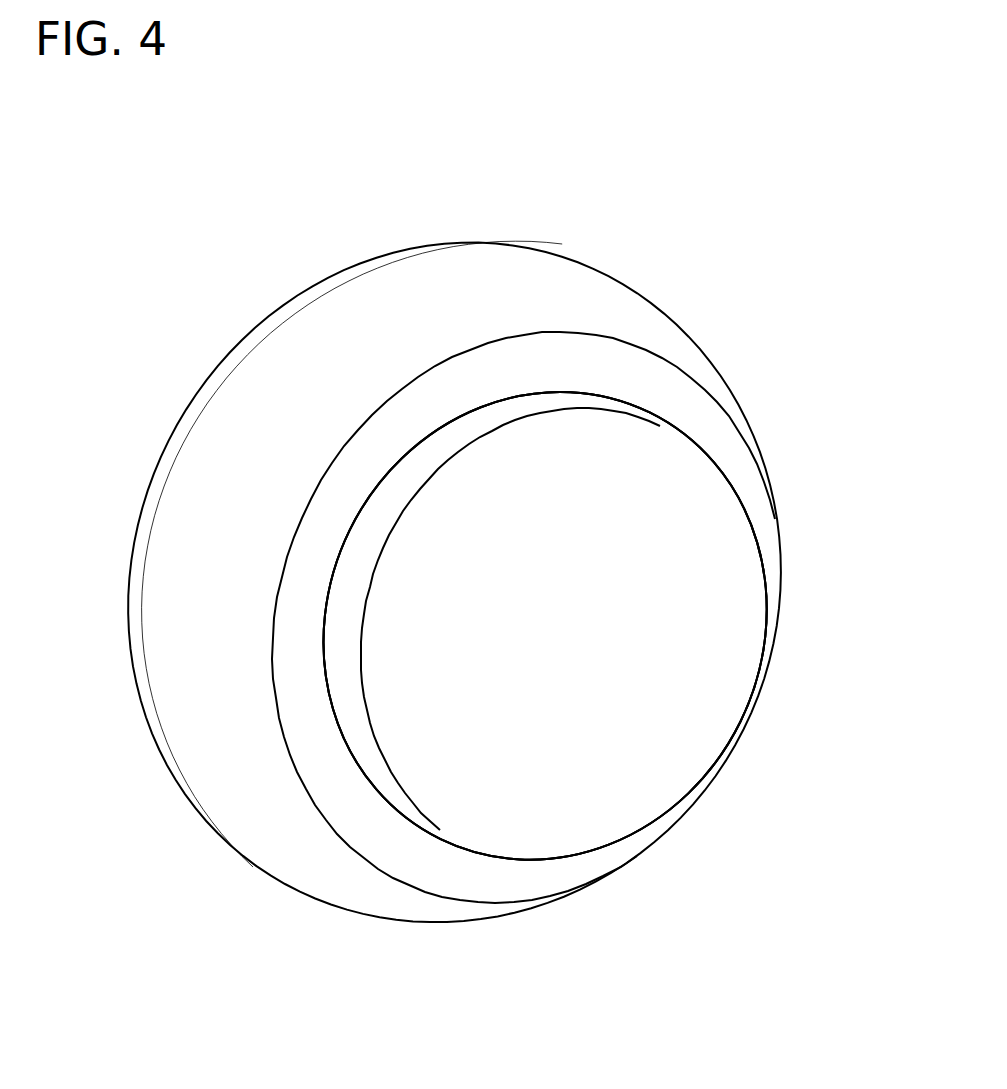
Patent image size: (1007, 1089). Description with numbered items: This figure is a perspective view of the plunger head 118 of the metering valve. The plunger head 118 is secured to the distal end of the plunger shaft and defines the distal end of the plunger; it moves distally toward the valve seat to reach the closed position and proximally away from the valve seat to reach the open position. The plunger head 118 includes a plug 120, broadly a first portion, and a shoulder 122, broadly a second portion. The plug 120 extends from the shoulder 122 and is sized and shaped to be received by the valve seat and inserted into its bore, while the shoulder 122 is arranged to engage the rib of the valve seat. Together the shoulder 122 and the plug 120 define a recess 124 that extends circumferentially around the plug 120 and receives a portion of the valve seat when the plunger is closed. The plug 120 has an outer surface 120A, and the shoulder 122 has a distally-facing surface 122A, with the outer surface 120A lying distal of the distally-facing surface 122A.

The plunger head 118 is at (712, 214).
The plug 120 is at (672, 776).
The outer surface 120A is at (370, 763).
The shoulder 122 is at (752, 451).
The distally-facing surface 122A is at (390, 437).
The recess 124 is at (508, 376).